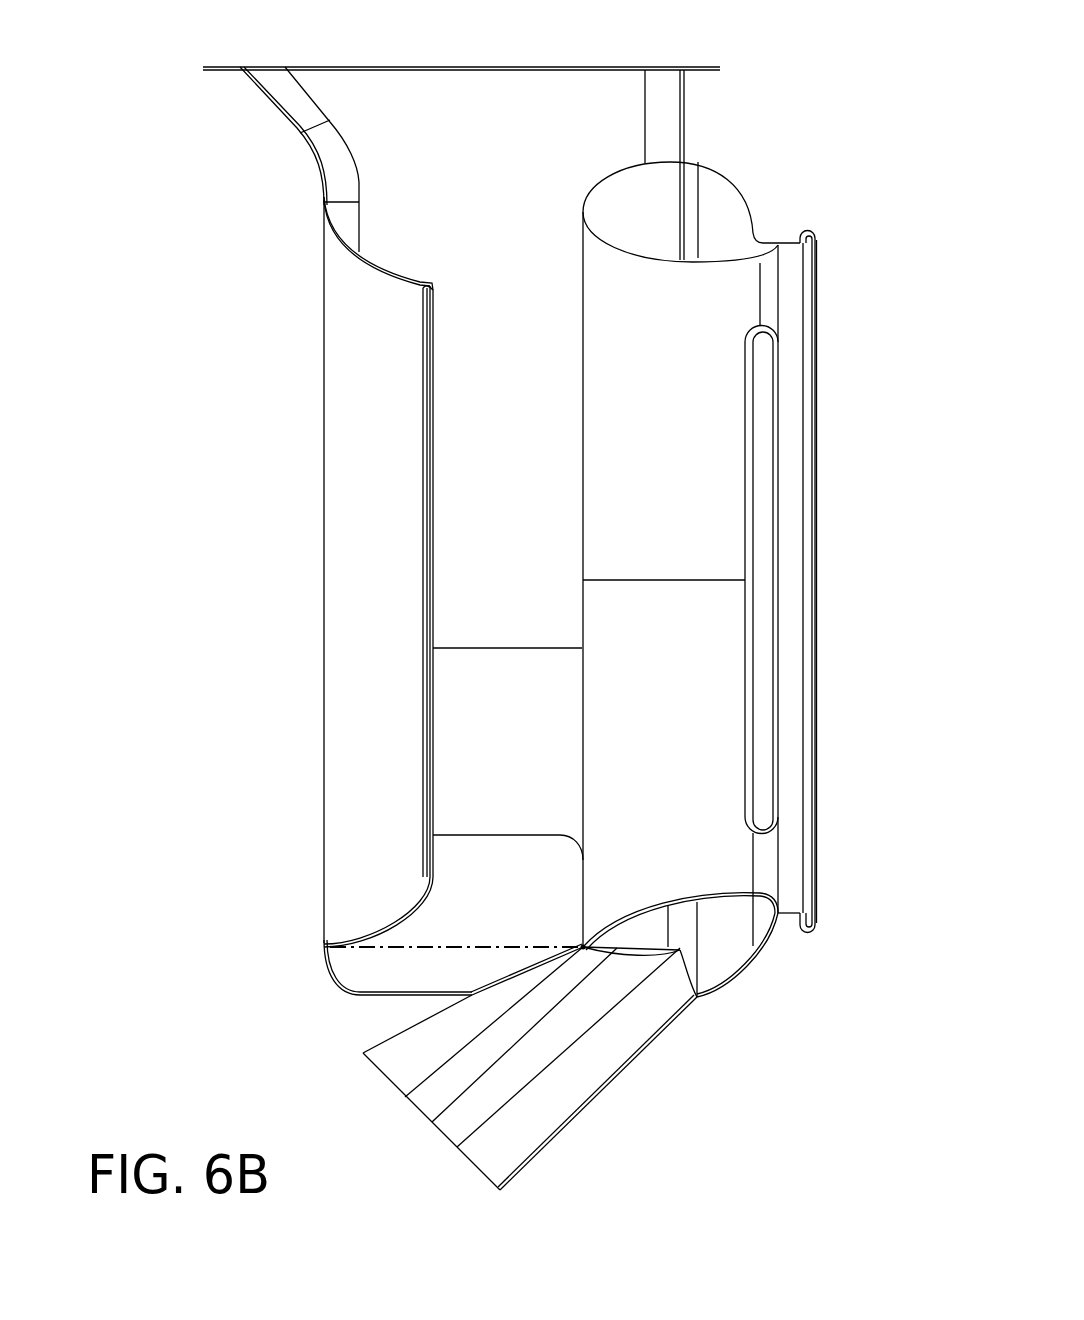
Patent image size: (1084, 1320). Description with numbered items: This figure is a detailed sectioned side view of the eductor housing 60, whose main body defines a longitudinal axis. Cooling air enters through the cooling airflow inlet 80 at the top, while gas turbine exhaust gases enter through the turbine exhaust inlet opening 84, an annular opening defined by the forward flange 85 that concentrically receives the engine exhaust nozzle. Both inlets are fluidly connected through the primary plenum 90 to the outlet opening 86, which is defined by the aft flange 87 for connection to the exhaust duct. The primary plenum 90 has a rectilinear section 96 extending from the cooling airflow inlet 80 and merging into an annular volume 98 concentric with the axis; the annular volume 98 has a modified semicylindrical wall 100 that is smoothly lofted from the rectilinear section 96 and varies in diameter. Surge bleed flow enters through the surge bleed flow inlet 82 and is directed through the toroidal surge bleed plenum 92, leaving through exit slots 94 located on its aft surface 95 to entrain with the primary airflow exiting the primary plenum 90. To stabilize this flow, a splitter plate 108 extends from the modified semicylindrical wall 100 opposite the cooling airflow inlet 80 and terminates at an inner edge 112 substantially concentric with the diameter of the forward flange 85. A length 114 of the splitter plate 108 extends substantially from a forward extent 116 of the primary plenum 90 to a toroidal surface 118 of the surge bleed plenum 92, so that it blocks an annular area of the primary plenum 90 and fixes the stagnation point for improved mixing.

The eductor housing 60 is at (230, 340).
The cooling airflow inlet 80 is at (600, 67).
The surge bleed flow inlet 82 is at (478, 1090).
The turbine exhaust inlet opening 84 is at (413, 595).
The forward flange 85 is at (420, 530).
The outlet opening 86 is at (816, 597).
The aft flange 87 is at (817, 542).
The primary plenum 90 is at (500, 460).
The surge bleed plenum 92 is at (710, 333).
The exit slots 94 is at (762, 730).
The aft surface 95 is at (758, 857).
The rectilinear section 96 is at (467, 212).
The annular volume 98 is at (497, 688).
The modified semicylindrical wall 100 is at (403, 992).
The splitter plate 108 is at (400, 965).
The inner edge 112 is at (493, 838).
The length 114 is at (420, 945).
The forward extent 116 is at (325, 972).
The toroidal surface 118 is at (578, 893).